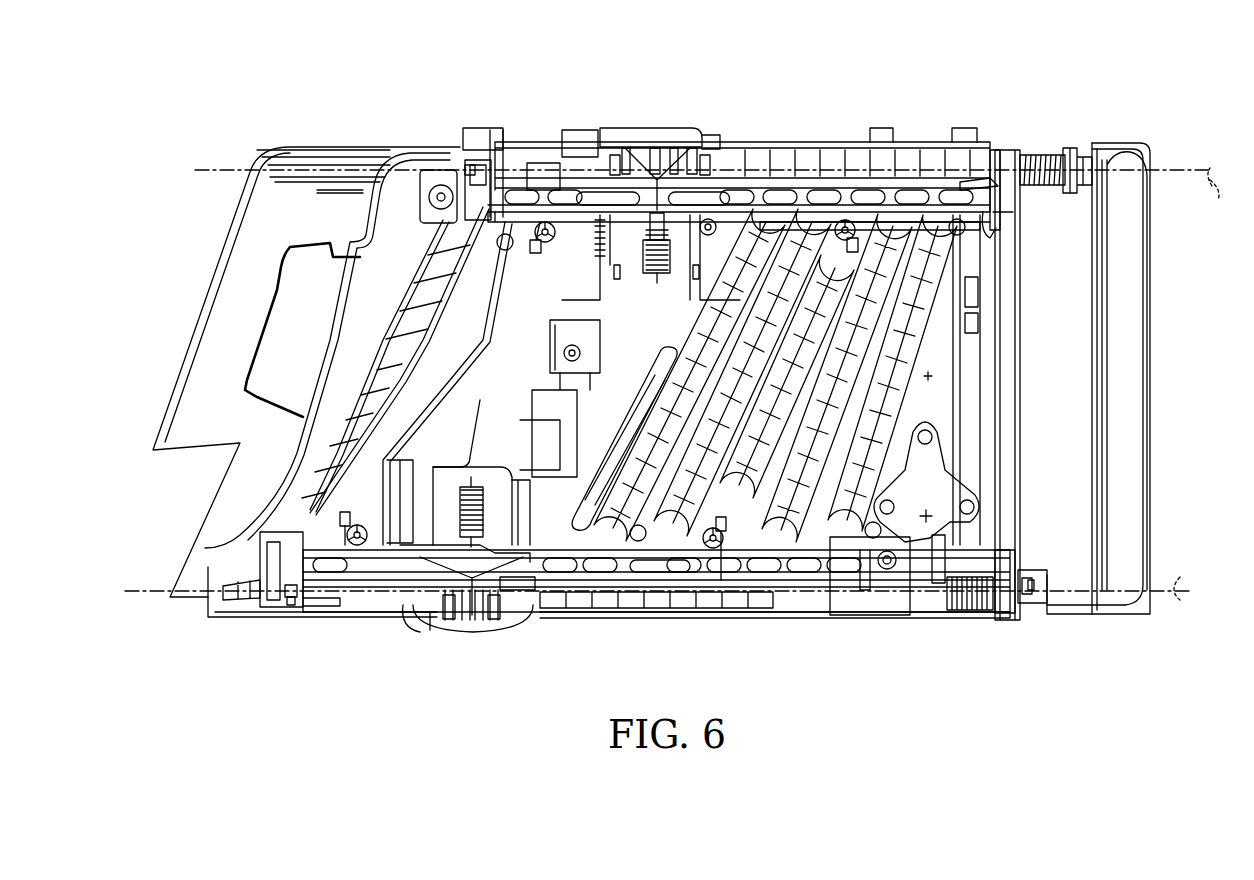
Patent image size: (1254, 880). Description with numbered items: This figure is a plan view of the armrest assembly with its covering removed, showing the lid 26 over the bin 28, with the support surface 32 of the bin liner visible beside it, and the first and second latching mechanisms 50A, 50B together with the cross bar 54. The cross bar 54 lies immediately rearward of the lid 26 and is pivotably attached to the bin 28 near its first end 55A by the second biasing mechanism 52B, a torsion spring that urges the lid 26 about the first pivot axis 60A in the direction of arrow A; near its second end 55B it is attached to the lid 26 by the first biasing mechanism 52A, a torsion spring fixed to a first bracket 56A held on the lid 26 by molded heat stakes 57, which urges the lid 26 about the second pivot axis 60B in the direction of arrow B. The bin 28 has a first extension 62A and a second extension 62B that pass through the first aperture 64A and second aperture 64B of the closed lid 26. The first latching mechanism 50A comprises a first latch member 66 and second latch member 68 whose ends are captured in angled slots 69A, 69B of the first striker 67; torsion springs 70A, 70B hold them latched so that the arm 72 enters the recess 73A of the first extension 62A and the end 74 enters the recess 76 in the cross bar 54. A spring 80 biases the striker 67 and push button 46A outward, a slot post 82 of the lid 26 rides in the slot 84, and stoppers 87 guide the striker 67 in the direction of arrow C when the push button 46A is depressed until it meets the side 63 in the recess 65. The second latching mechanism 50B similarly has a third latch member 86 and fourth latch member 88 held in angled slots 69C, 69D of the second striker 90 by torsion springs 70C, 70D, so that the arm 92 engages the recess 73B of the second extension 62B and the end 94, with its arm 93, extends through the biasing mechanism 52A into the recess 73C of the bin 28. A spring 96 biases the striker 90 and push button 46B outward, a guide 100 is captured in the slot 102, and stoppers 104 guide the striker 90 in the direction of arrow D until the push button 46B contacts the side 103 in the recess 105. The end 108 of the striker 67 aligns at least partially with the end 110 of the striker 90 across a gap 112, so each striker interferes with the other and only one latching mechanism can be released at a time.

The lid 26 is at (405, 250).
The bin 28 is at (1093, 247).
The support surface 32 is at (232, 422).
The push button 46A is at (660, 148).
The push button 46B is at (470, 640).
The first latching mechanism 50A is at (752, 188).
The second latching mechanism 50B is at (554, 606).
The first biasing mechanism 52A is at (975, 610).
The second biasing mechanism 52B is at (1040, 158).
The cross bar 54 is at (1008, 370).
The first end 55A is at (995, 205).
The second end 55B is at (1005, 572).
The first bracket 56A is at (905, 542).
The molded heat stakes 57 is at (924, 432).
The first pivot axis 60A is at (240, 170).
The second pivot axis 60B is at (160, 592).
The first extension 62A is at (470, 195).
The second extension 62B is at (293, 600).
The side 63 is at (716, 148).
The first aperture 64A is at (432, 195).
The second aperture 64B is at (270, 575).
The recess 65 is at (592, 165).
The first latch member 66 is at (562, 190).
The first striker 67 is at (660, 172).
The second latch member 68 is at (808, 195).
The angled slot 69A is at (640, 172).
The angled slot 69B is at (678, 172).
The angled slot 69C is at (445, 622).
The angled slot 69D is at (493, 622).
The torsion spring 70A is at (543, 222).
The torsion spring 70B is at (848, 222).
The torsion spring 70C is at (356, 592).
The torsion spring 70D is at (740, 590).
The arm 72 is at (493, 180).
The recess 73A is at (468, 172).
The recess 73B is at (290, 618).
The recess 73C is at (1035, 612).
The end 74 is at (978, 185).
The recess 76 is at (990, 222).
The spring 80 is at (668, 258).
The slot post 82 is at (565, 354).
The slot 84 is at (556, 322).
The third latch member 86 is at (622, 170).
The stoppers 87 is at (612, 272).
The fourth latch member 88 is at (683, 585).
The second striker 90 is at (515, 580).
The arm 92 is at (322, 603).
The arm 93 is at (800, 578).
The end 94 is at (1018, 604).
The spring 96 is at (492, 512).
The guide 100 is at (515, 480).
The slot 102 is at (538, 560).
The side 103 is at (415, 620).
The stoppers 104 is at (478, 488).
The recess 105 is at (432, 620).
The end 108 is at (624, 381).
The end 110 is at (635, 429).
The gap 112 is at (605, 410).
The arrow A is at (1174, 160).
The arrow B is at (1194, 608).
The arrow C is at (649, 322).
The arrow D is at (484, 437).